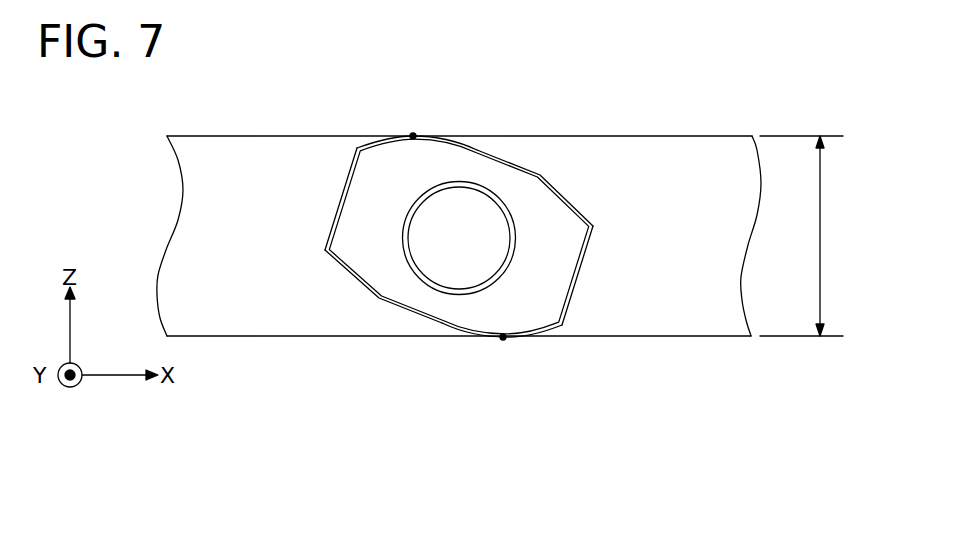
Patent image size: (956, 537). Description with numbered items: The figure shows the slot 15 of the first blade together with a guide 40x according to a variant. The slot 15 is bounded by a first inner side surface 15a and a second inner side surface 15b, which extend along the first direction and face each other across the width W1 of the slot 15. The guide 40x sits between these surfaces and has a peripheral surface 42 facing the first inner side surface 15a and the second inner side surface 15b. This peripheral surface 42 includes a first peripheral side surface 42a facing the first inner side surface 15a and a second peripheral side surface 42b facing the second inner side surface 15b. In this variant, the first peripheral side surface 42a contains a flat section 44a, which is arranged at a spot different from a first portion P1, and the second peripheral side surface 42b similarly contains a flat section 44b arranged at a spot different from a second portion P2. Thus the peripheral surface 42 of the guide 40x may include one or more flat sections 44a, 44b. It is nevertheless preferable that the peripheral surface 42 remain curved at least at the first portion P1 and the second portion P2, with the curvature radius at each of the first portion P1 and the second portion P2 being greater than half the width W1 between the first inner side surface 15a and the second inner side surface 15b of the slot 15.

The slot 15 is at (768, 122).
The first inner side surface 15a is at (650, 157).
The second inner side surface 15b is at (648, 336).
The width W1 is at (813, 236).
The peripheral surface 42 is at (545, 175).
The first peripheral side surface 42a is at (545, 175).
The second peripheral side surface 42b is at (383, 303).
The flat section 44a is at (478, 150).
The flat section 44b is at (425, 318).
The guide 40x is at (358, 223).
The first portion P1 is at (413, 136).
The second portion P2 is at (503, 337).